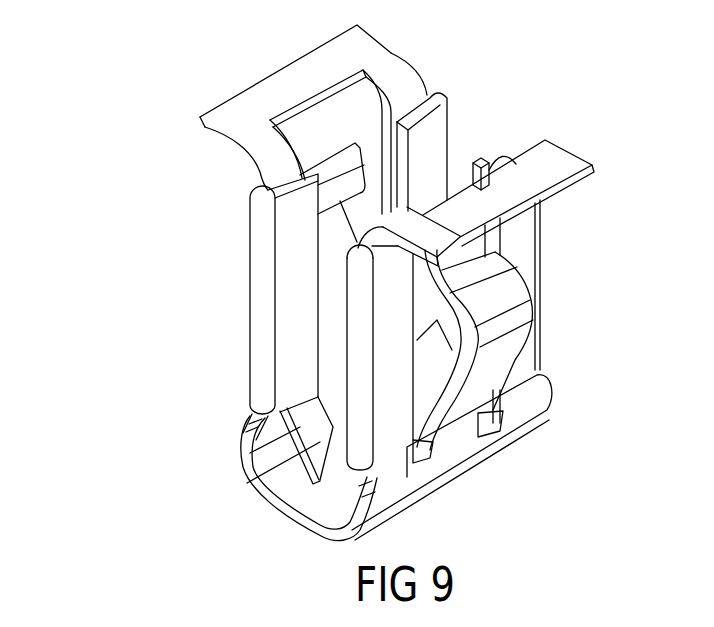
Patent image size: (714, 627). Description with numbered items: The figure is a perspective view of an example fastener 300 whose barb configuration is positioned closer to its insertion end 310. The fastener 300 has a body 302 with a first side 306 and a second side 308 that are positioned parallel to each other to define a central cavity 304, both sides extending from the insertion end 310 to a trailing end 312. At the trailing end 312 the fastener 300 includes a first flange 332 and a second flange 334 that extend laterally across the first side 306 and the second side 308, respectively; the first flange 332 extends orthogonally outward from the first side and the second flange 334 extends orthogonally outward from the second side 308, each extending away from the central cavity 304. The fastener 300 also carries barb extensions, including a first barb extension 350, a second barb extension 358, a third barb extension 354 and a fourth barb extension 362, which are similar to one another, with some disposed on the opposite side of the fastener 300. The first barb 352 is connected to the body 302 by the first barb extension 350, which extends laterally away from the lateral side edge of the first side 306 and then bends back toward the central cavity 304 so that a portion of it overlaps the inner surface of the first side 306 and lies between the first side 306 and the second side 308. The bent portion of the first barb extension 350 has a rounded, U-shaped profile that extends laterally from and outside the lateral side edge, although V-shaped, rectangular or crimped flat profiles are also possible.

The fastener 300 is at (135, 134).
The body 302 is at (523, 395).
The central cavity 304 is at (514, 92).
The first side 306 is at (266, 432).
The second side 308 is at (387, 477).
The insertion end 310 is at (294, 521).
The trailing end 312 is at (393, 53).
The first flange 332 is at (297, 79).
The second flange 334 is at (556, 162).
The first barb extension 350 is at (296, 303).
The first barb 352 is at (262, 481).
The third barb extension 354 is at (358, 242).
The second barb extension 358 is at (433, 130).
The fourth barb extension 362 is at (483, 163).